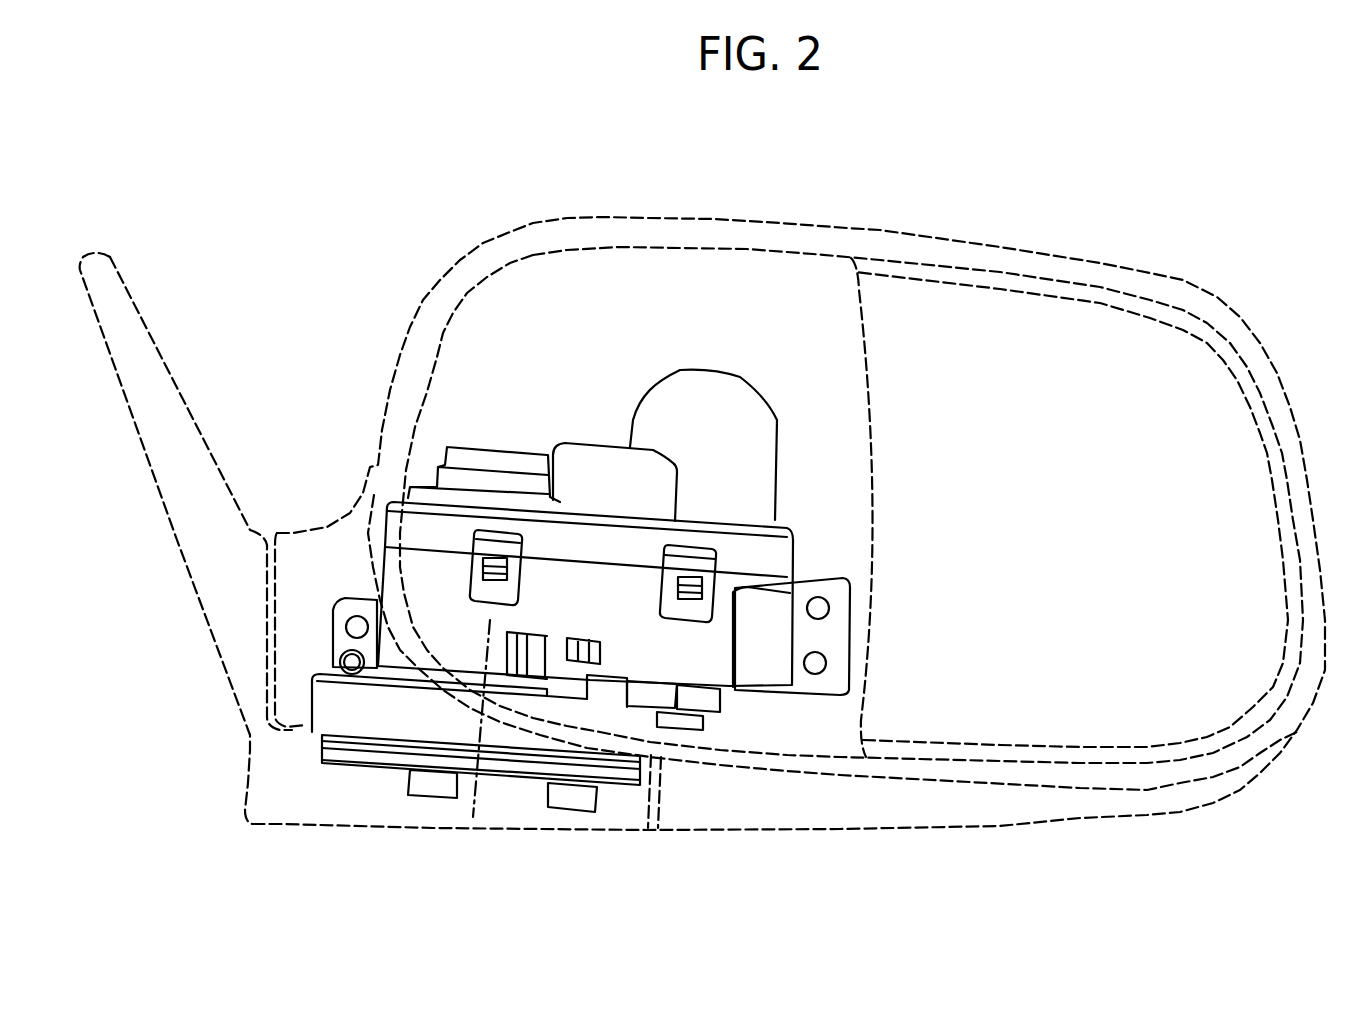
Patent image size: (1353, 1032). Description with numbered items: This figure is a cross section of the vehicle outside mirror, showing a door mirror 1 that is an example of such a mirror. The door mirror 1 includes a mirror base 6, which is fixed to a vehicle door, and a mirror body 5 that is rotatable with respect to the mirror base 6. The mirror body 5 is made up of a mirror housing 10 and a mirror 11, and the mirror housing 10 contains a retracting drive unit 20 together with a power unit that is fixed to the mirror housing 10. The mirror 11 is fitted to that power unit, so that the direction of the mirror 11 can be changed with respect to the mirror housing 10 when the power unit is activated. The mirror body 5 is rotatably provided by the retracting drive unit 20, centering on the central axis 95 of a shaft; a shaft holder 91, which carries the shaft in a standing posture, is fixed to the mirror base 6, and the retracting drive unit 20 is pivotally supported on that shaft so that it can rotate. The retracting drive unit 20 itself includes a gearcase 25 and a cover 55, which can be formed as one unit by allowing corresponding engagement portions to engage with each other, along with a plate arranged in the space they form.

The door mirror 1 is at (737, 190).
The mirror body 5 is at (650, 218).
The mirror base 6 is at (148, 462).
The mirror housing 10 is at (1060, 256).
The mirror 11 is at (1133, 380).
The retracting drive unit 20 is at (503, 450).
The gearcase 25 is at (757, 690).
The cover 55 is at (593, 443).
The shaft holder 91 is at (343, 768).
The central axis 95 is at (477, 790).